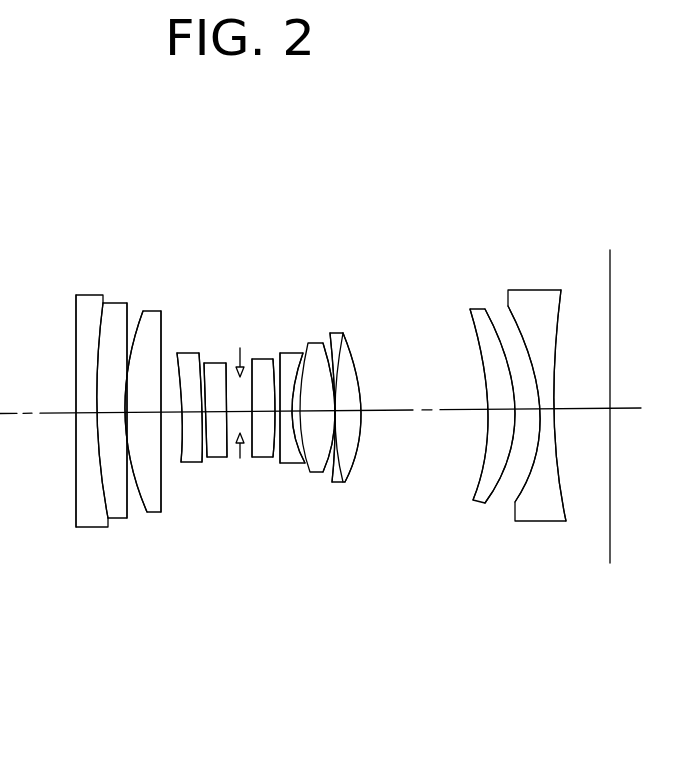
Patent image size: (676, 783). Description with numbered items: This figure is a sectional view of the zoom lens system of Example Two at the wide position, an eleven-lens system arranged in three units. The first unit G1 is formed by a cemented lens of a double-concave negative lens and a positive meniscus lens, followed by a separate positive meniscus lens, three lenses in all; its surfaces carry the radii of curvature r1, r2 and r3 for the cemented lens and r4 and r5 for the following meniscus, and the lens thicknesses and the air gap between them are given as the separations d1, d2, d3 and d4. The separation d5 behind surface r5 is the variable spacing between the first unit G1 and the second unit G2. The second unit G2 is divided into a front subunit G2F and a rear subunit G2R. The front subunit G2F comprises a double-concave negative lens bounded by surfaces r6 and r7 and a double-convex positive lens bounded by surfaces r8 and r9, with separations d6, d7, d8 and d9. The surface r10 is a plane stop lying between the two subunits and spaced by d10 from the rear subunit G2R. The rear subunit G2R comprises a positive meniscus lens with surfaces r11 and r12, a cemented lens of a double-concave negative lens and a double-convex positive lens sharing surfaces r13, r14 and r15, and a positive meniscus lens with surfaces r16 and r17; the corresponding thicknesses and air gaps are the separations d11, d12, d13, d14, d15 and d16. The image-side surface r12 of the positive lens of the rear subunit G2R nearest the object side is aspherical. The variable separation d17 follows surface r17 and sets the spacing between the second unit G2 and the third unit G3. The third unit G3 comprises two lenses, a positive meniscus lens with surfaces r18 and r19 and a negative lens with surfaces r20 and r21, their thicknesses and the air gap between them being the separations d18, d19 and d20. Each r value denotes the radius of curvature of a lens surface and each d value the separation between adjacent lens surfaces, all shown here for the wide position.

The first unit G1 is at (161, 213).
The second unit G2 is at (348, 153).
The front subunit G2F is at (227, 210).
The rear subunit G2R is at (350, 210).
The third unit G3 is at (565, 210).
The lens surface radius of curvature r1 is at (75, 312).
The lens surface radius of curvature r2 is at (103, 316).
The lens surface radius of curvature r3 is at (127, 317).
The lens surface radius of curvature r4 is at (139, 318).
The lens surface radius of curvature r5 is at (161, 310).
The lens surface radius of curvature r6 is at (178, 353).
The lens surface radius of curvature r7 is at (199, 358).
The lens surface radius of curvature r8 is at (205, 362).
The lens surface radius of curvature r9 is at (226, 362).
The stop r10 is at (252, 357).
The lens surface radius of curvature r11 is at (273, 358).
The lens surface radius of curvature r12 is at (281, 353).
The lens surface radius of curvature r13 is at (302, 352).
The lens surface radius of curvature r14 is at (324, 343).
The lens surface radius of curvature r15 is at (331, 333).
The lens surface radius of curvature r16 is at (347, 350).
The lens surface radius of curvature r17 is at (360, 348).
The lens surface radius of curvature r18 is at (470, 318).
The lens surface radius of curvature r19 is at (489, 314).
The lens surface radius of curvature r20 is at (518, 310).
The lens surface radius of curvature r21 is at (557, 322).
The separation between adjacent lens surfaces d1 is at (87, 416).
The separation between adjacent lens surfaces d2 is at (108, 416).
The separation between adjacent lens surfaces d3 is at (127, 416).
The separation between adjacent lens surfaces d4 is at (167, 416).
The separation between adjacent lens surfaces d5 is at (174, 416).
The separation between adjacent lens surfaces d6 is at (189, 416).
The separation between adjacent lens surfaces d7 is at (212, 416).
The separation between adjacent lens surfaces d8 is at (231, 416).
The separation between adjacent lens surfaces d9 is at (246, 416).
The separation between adjacent lens surfaces d10 is at (263, 416).
The separation between adjacent lens surfaces d11 is at (277, 416).
The separation between adjacent lens surfaces d12 is at (286, 416).
The separation between adjacent lens surfaces d13 is at (296, 416).
The separation between adjacent lens surfaces d14 is at (321, 407).
The separation between adjacent lens surfaces d15 is at (337, 418).
The separation between adjacent lens surfaces d16 is at (350, 417).
The separation between adjacent lens surfaces d17 is at (424, 418).
The separation between adjacent lens surfaces d18 is at (498, 416).
The separation between adjacent lens surfaces d19 is at (528, 416).
The separation between adjacent lens surfaces d20 is at (545, 416).